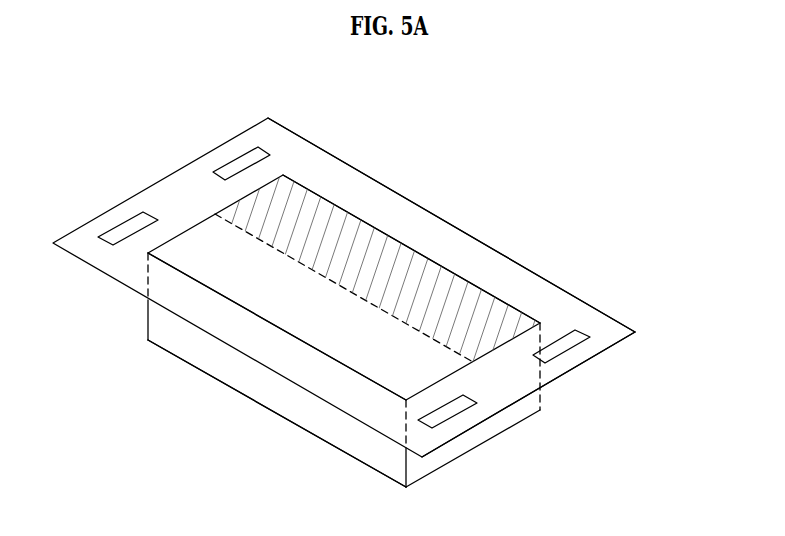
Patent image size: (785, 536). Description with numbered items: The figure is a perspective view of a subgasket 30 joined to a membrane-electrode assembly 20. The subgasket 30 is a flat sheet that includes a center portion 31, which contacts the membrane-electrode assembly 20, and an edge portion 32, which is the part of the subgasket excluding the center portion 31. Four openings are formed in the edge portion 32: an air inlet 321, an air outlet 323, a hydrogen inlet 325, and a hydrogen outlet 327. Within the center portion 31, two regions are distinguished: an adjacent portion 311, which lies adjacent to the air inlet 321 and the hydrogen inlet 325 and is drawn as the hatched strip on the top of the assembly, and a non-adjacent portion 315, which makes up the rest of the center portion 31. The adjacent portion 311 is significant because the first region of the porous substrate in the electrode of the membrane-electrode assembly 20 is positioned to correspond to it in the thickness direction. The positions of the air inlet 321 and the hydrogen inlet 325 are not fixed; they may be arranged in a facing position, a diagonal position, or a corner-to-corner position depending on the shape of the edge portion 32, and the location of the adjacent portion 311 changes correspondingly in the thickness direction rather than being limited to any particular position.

The membrane-electrode assembly 20 is at (345, 440).
The subgasket 30 is at (631, 313).
The center portion 31 is at (310, 187).
The adjacent portion 311 is at (400, 257).
The non-adjacent portion 315 is at (307, 322).
The edge portion 32 is at (552, 297).
The air inlet 321 is at (562, 346).
The air outlet 323 is at (448, 417).
The hydrogen inlet 325 is at (241, 162).
The hydrogen outlet 327 is at (128, 229).